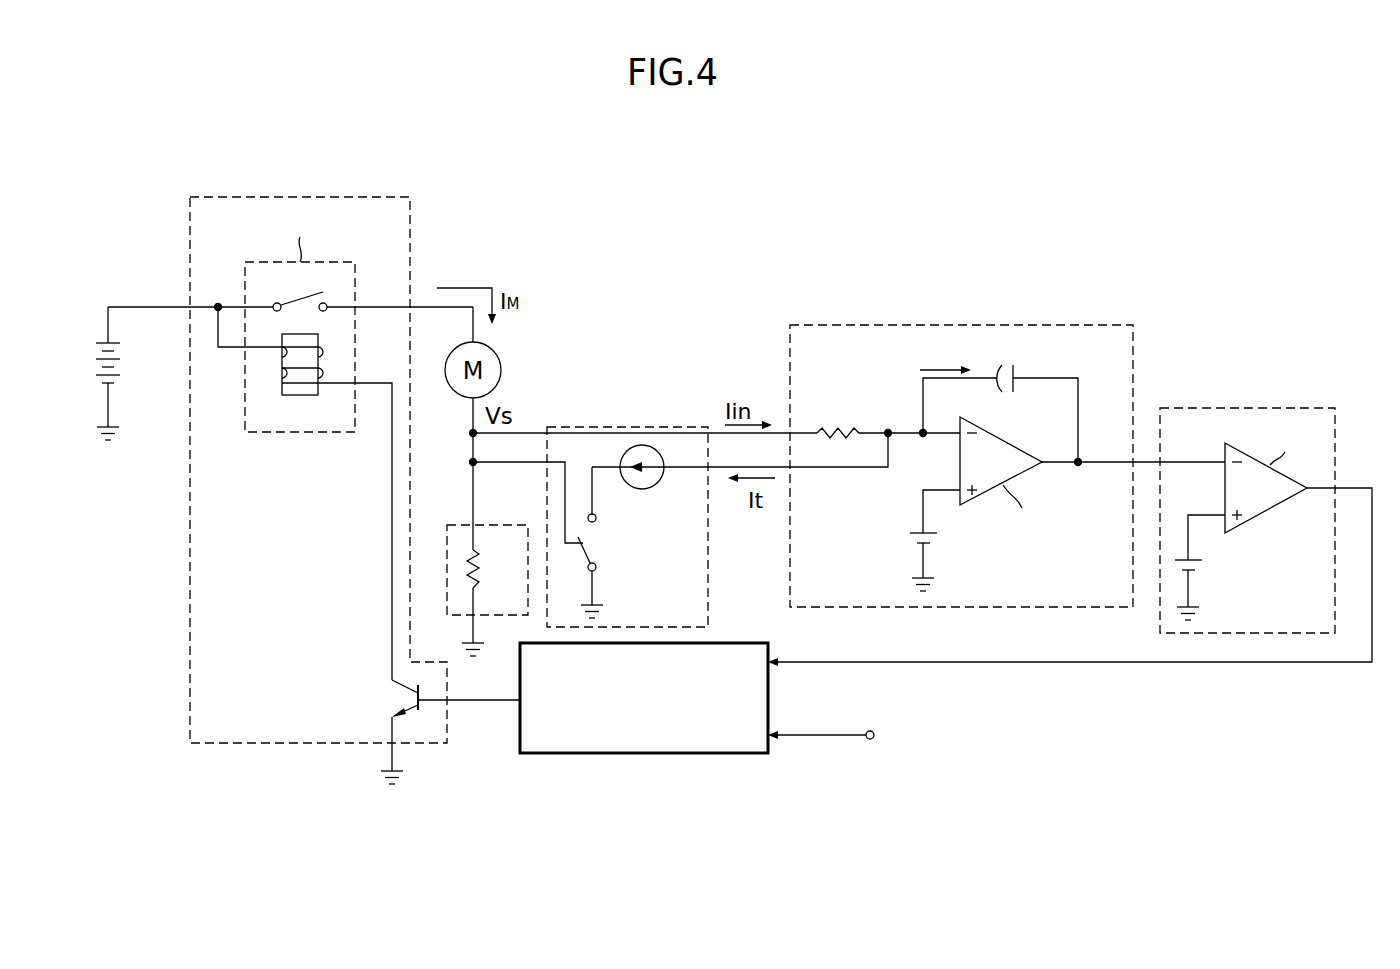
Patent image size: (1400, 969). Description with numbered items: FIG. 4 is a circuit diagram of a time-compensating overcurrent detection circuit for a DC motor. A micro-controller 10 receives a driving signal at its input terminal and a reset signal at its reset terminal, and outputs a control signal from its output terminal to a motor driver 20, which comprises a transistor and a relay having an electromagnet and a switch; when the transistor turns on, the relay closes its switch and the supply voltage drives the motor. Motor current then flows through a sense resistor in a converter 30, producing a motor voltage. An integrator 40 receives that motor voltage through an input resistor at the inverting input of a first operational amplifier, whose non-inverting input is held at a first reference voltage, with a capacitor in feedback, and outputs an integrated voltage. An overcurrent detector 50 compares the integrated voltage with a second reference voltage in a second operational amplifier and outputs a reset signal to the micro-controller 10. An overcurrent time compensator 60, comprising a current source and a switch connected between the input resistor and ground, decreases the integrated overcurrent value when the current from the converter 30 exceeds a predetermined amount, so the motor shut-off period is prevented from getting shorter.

The micro-controller 10 is at (645, 753).
The motor driver 20 is at (190, 243).
The converter 30 is at (500, 525).
The integrator 40 is at (980, 325).
The overcurrent detector 50 is at (1245, 408).
The overcurrent time compensator 60 is at (633, 427).